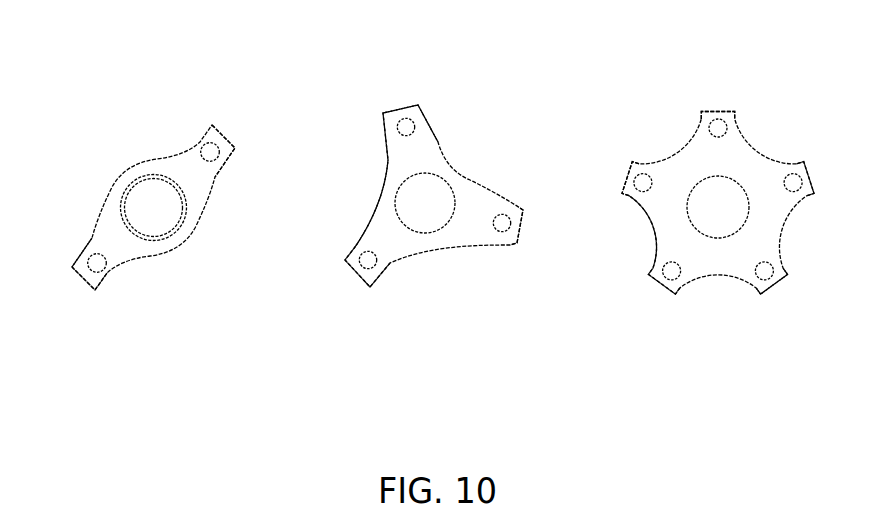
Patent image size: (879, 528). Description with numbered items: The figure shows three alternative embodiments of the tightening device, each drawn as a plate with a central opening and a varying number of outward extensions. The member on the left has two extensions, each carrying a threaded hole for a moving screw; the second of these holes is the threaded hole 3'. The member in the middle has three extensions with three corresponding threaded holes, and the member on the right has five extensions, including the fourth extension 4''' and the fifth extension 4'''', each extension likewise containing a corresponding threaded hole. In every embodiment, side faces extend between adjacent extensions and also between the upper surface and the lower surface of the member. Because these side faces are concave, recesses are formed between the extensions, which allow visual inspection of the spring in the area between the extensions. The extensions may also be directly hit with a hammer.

The threaded hole 3' is at (94, 295).
The extension 4''' is at (683, 309).
The extension 4'''' is at (617, 163).